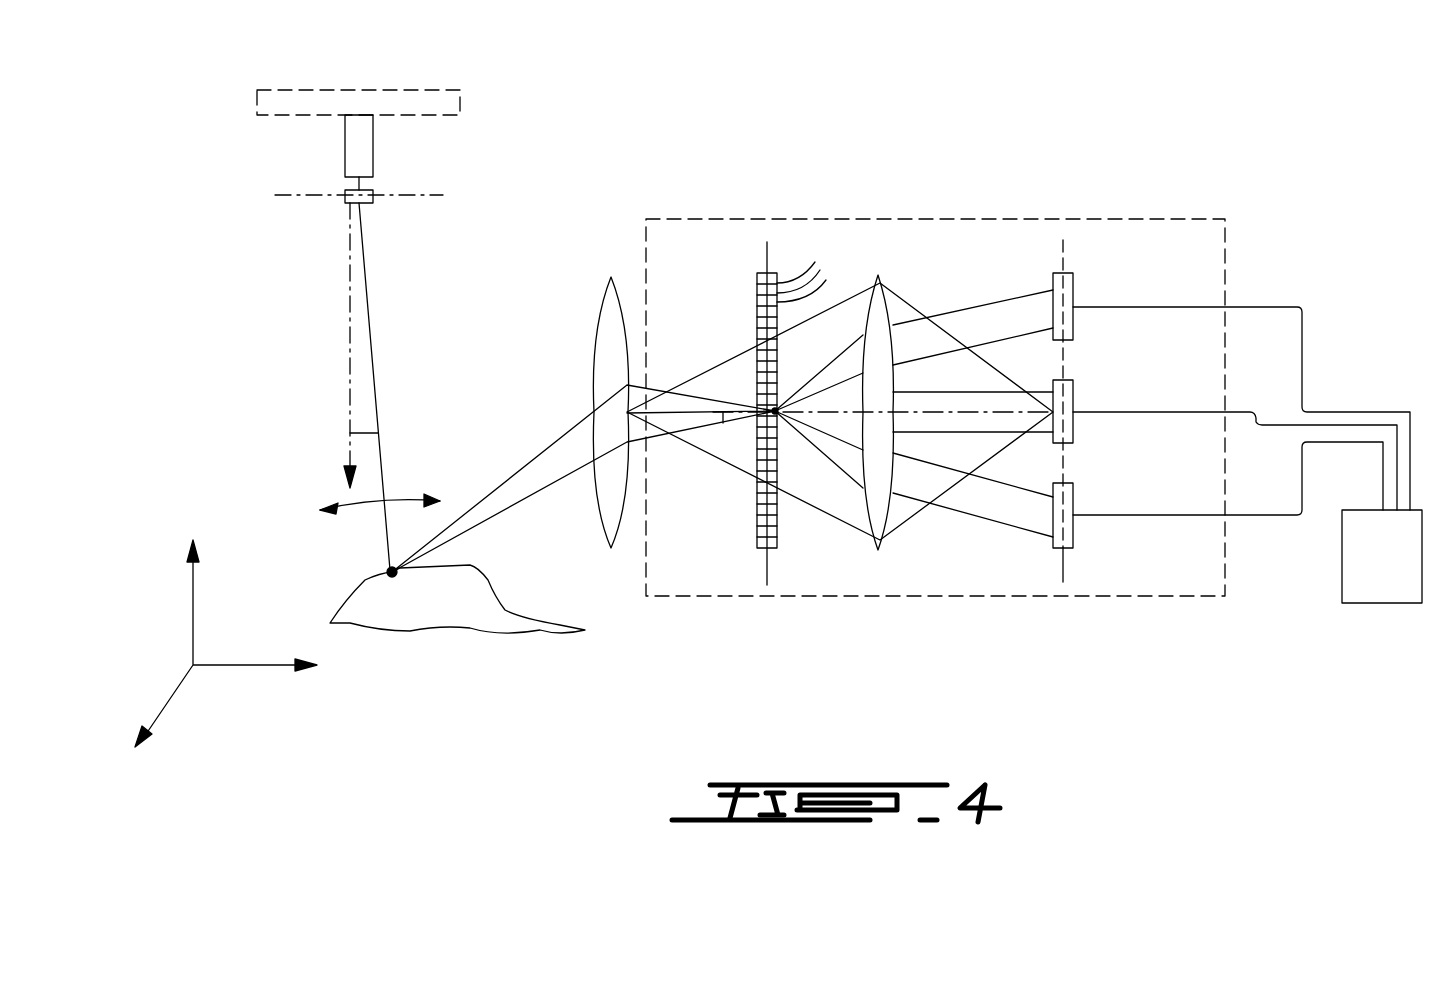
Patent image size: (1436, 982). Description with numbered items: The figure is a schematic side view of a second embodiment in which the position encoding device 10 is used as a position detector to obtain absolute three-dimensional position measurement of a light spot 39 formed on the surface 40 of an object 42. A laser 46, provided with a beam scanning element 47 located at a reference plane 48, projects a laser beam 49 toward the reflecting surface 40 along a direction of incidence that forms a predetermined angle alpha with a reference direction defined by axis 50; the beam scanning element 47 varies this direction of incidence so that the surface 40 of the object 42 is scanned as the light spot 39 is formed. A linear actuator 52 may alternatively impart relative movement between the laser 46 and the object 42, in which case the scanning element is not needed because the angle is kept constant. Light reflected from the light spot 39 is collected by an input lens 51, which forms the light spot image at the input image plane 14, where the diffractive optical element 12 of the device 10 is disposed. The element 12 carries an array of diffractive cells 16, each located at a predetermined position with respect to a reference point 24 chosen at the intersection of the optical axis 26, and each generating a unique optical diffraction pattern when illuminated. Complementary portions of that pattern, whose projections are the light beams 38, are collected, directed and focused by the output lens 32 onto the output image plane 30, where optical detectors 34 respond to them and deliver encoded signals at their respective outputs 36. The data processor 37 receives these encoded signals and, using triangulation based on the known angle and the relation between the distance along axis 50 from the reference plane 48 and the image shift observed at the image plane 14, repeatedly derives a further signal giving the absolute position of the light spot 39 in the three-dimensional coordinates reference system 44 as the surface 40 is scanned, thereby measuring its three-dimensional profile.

The position encoding device 10 is at (1040, 218).
The diffractive optical element 12 is at (757, 305).
The input image plane 14 is at (760, 252).
The diffractive cells 16 is at (813, 266).
The reference point 24 is at (773, 420).
The optical axis 26 is at (722, 424).
The output image plane 30 is at (1068, 260).
The lens 32 is at (880, 290).
The optical detectors 34 is at (1075, 330).
The outputs 36 is at (1075, 297).
The data processor 37 is at (1362, 582).
The light beams 38 is at (1000, 315).
The light spot 39 is at (385, 570).
The surface 40 is at (482, 566).
The object 42 is at (420, 613).
The three-dimensional coordinates reference system 44 is at (246, 667).
The laser 46 is at (368, 144).
The beam scanning element 47 is at (365, 205).
The reference plane 48 is at (293, 190).
The laser beam 49 is at (368, 290).
The axis 50 is at (350, 355).
The lens 51 is at (608, 297).
The linear actuator 52 is at (328, 90).